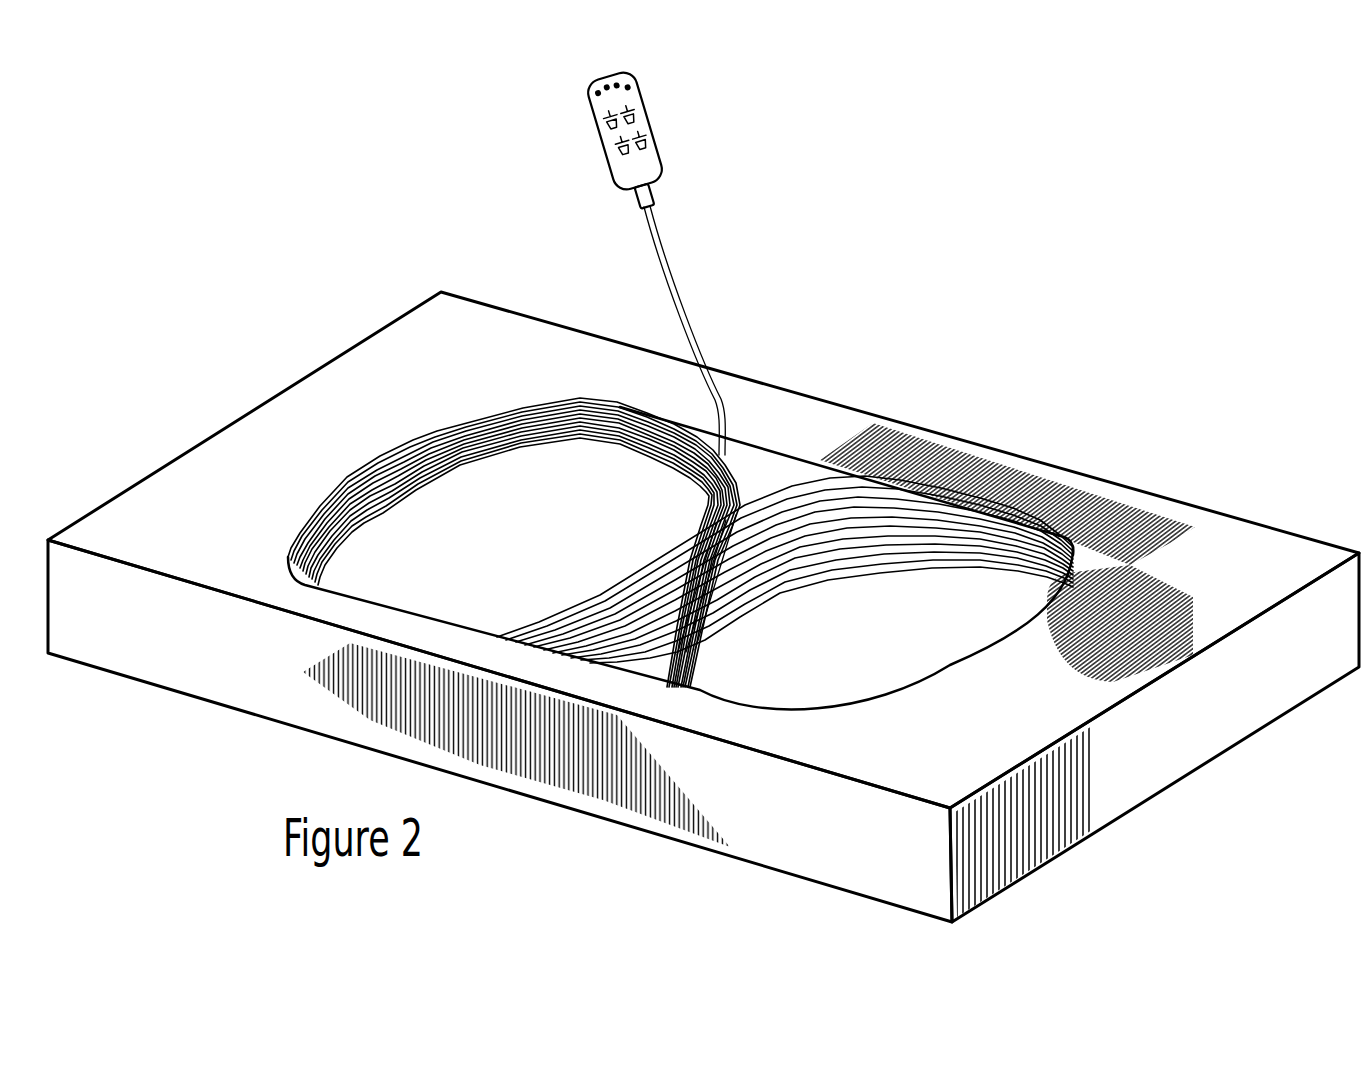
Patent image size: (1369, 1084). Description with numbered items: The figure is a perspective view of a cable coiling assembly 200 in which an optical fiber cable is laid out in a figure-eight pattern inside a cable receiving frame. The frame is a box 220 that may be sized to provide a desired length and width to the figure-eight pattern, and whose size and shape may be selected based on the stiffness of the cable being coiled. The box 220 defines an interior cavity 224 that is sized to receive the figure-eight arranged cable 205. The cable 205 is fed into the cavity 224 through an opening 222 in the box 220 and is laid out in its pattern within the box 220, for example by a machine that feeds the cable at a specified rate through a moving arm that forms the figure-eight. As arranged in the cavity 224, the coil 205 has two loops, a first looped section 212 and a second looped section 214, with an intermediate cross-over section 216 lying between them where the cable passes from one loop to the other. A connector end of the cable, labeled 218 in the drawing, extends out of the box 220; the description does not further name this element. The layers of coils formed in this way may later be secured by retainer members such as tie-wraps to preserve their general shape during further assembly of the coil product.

The cable coiling assembly 200 is at (717, 867).
The cable 205 is at (716, 386).
The first looped section 212 is at (600, 632).
The second looped section 214 is at (700, 640).
The intermediate cross-over section 216 is at (743, 503).
The connector 218 is at (663, 250).
The box 220 is at (171, 513).
The opening 222 is at (384, 603).
The interior cavity 224 is at (468, 520).